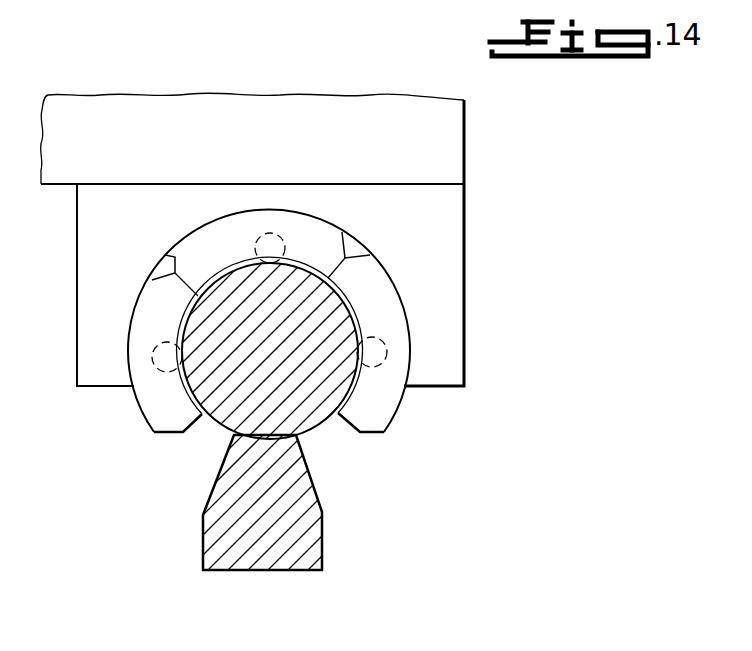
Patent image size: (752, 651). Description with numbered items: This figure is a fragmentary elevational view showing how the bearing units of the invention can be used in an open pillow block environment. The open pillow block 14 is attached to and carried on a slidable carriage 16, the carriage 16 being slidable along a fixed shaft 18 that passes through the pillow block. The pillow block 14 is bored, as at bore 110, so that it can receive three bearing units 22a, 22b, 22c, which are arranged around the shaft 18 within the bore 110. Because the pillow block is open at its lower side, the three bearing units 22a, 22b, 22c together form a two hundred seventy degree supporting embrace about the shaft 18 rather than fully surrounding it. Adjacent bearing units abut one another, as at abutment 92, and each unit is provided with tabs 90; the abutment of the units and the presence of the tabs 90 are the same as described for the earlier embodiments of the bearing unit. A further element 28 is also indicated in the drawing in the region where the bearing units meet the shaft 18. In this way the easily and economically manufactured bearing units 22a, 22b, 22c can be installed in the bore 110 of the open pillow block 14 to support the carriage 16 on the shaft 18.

The carriage 16 is at (450, 143).
The open pillow block 14 is at (452, 233).
The bore 110 is at (408, 355).
The bearing race 28 is at (358, 343).
The fixed shaft 18 is at (324, 411).
The tab 90 is at (165, 255).
The abutment 92 is at (329, 262).
The bearing unit 22a is at (183, 398).
The bearing unit 22b is at (213, 265).
The bearing unit 22c is at (388, 309).